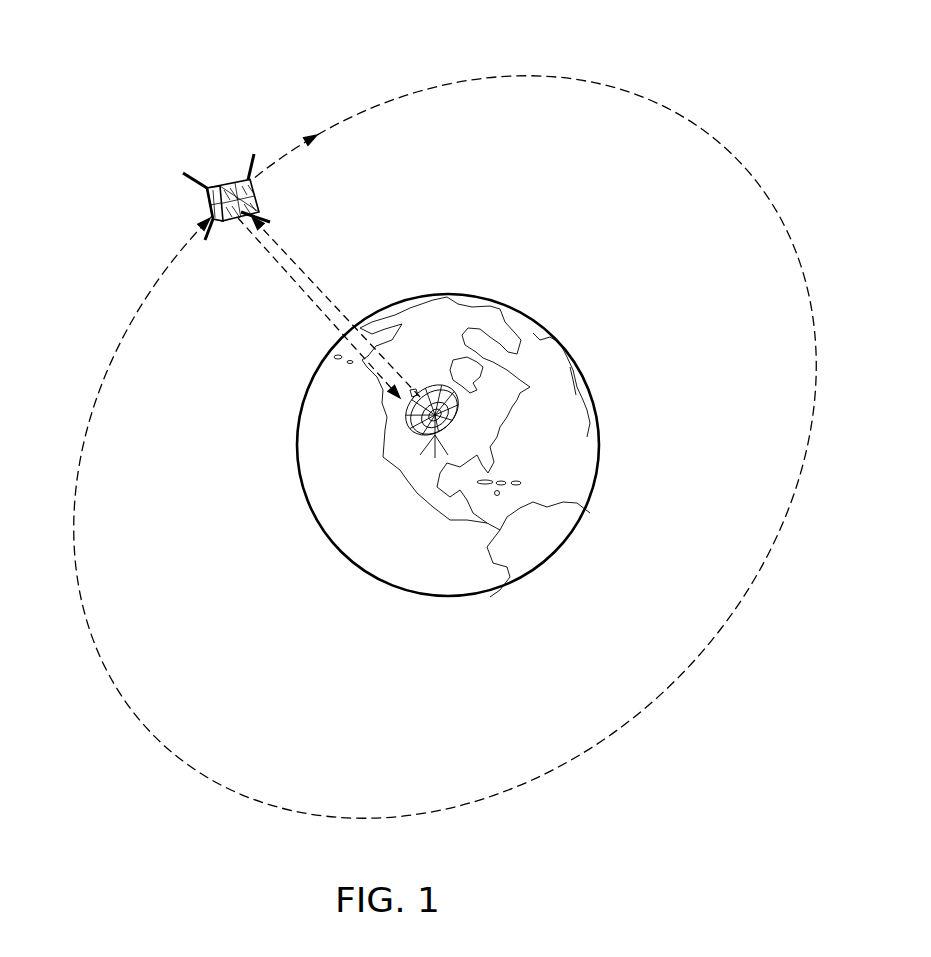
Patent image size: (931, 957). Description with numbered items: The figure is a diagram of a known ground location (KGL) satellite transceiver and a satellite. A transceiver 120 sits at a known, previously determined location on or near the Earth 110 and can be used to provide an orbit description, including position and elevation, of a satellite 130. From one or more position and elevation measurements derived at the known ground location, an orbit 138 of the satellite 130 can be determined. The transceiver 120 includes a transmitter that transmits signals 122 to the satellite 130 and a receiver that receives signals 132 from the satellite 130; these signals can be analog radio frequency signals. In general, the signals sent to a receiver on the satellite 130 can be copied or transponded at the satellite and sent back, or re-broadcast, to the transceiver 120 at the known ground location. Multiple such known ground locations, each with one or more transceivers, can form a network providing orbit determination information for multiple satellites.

The Earth 110 is at (446, 560).
The transceiver 120 is at (407, 423).
The signals 122 is at (320, 290).
The satellite 130 is at (212, 240).
The signals 132 is at (302, 290).
The orbit 138 is at (452, 82).